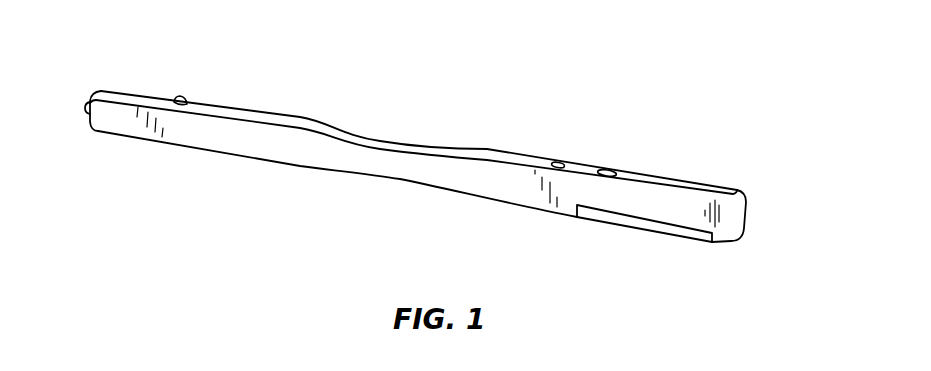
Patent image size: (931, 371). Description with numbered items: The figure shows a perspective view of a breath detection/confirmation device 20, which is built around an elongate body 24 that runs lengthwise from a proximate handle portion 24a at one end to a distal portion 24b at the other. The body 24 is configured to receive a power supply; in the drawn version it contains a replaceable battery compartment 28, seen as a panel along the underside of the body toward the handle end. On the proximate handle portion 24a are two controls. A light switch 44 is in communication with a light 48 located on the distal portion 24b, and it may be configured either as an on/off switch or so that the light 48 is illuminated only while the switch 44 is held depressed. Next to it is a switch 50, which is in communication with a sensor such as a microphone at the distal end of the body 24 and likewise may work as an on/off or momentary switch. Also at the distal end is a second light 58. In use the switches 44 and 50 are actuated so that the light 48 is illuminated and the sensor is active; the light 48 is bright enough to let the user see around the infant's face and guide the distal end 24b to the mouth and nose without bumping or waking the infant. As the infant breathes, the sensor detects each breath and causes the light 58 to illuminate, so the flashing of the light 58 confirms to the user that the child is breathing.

The breath detection/confirmation device 20 is at (374, 104).
The elongate body 24 is at (500, 188).
The proximate handle portion 24a is at (738, 212).
The distal portion 24b is at (108, 124).
The replaceable battery compartment 28 is at (645, 226).
The light switch 44 is at (559, 162).
The light 48 is at (88, 106).
The switch 50 is at (612, 169).
The light 58 is at (182, 98).